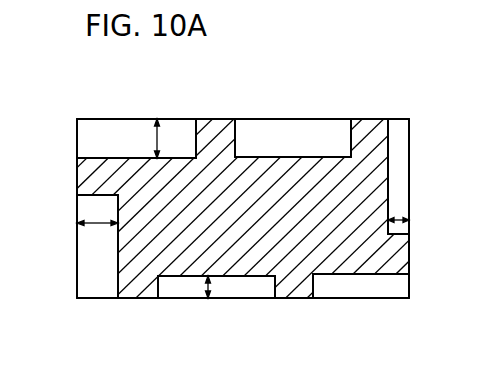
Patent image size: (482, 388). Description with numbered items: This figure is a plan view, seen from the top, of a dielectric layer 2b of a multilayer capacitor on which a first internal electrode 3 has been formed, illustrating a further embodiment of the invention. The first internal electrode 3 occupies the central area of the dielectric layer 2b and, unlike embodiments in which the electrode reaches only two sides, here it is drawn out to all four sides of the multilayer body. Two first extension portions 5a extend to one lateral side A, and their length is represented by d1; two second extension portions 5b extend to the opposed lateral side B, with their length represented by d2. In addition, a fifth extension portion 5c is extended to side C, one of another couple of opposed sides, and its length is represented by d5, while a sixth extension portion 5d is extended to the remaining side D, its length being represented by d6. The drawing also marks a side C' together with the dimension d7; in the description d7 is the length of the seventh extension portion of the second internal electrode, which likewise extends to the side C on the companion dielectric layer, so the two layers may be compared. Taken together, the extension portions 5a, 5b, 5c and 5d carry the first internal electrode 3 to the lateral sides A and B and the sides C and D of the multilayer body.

The first internal electrode 3 is at (350, 258).
The first extension portion 5a is at (220, 133).
The second extension portion 5b is at (143, 287).
The fifth extension portion 5c is at (100, 158).
The sixth extension portion 5d is at (390, 258).
The dielectric layer 2b is at (411, 180).
The lateral side A is at (302, 119).
The lateral side B is at (337, 298).
The side C is at (71, 241).
The right side surface C' is at (435, 176).
The side D is at (411, 134).
The length of first extension portion d1 is at (155, 128).
The length of second extension portion d2 is at (205, 292).
The length of fifth extension portion d5 is at (97, 226).
The length of sixth extension portion d6 is at (400, 222).
The length of seventh extension portion d7 is at (445, 235).